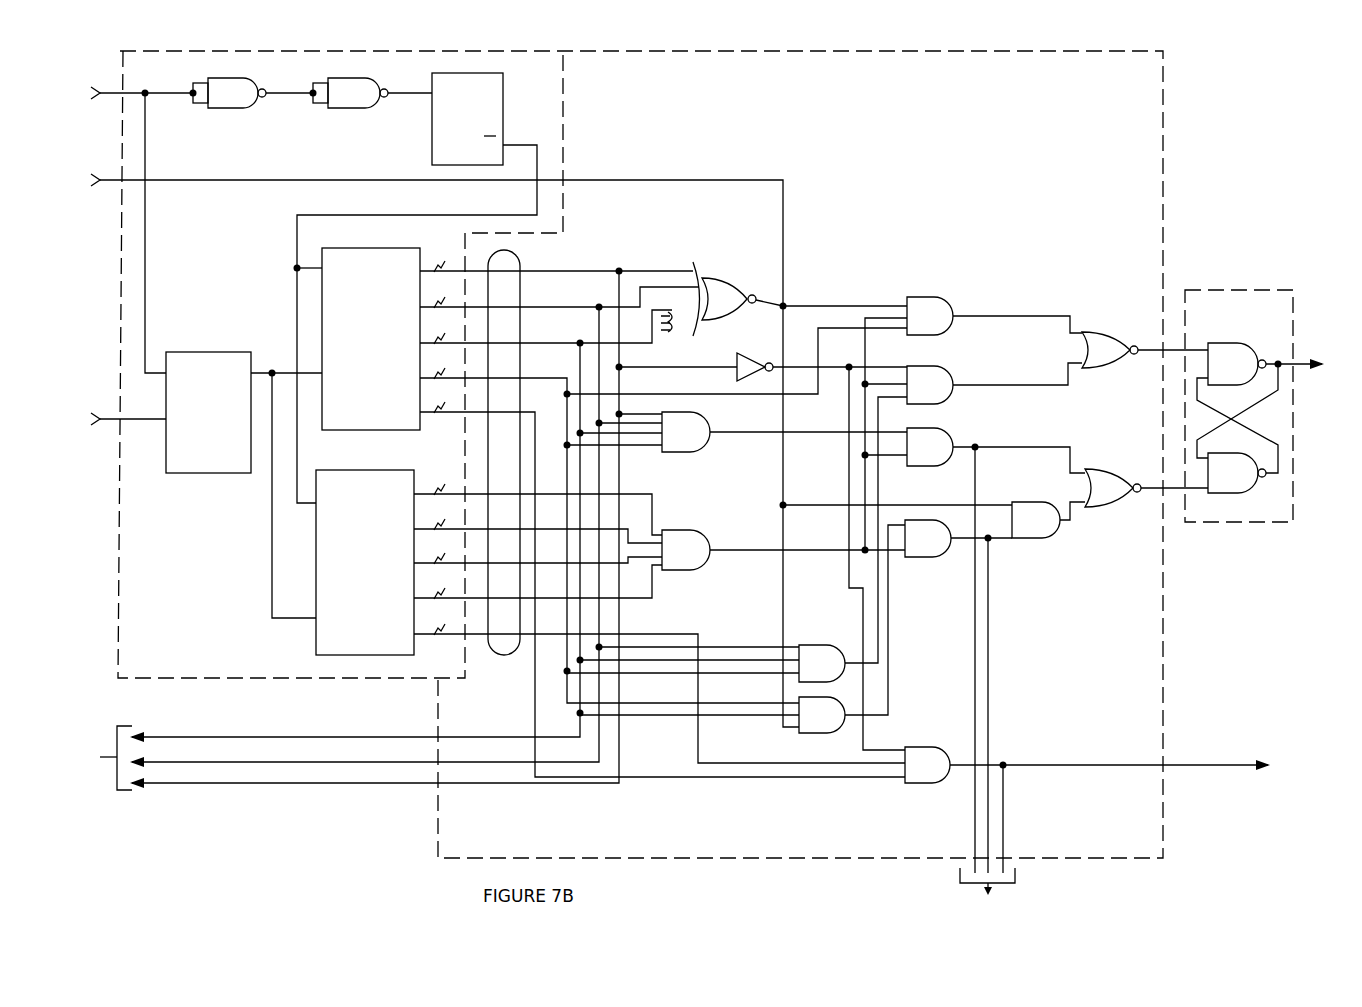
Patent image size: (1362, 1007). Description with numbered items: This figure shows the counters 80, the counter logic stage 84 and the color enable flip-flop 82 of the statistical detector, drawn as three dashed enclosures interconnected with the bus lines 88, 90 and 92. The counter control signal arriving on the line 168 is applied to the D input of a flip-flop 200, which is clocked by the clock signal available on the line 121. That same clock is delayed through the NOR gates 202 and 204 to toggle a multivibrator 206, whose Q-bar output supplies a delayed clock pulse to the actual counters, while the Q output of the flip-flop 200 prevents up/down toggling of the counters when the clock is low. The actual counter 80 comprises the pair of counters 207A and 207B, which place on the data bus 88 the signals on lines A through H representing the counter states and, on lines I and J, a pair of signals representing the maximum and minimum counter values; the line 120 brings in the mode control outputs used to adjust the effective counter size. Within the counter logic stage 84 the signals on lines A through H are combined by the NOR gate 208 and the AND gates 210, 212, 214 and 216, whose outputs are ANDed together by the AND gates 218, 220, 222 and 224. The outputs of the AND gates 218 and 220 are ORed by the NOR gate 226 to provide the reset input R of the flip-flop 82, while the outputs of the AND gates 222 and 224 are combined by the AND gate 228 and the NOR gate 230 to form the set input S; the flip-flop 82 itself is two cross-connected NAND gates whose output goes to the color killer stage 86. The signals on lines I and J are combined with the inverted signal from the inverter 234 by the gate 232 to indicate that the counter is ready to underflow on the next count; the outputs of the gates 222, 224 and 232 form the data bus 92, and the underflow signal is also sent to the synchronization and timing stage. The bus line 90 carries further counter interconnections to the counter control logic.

The counter 80 is at (123, 228).
The color enable flip-flop 82 is at (1195, 292).
The counter logic stage 84 is at (700, 52).
The output to 86 is at (1270, 411).
The data bus 88 is at (521, 254).
The bus line 90 is at (346, 529).
The data bus 92 is at (987, 683).
The line 120 is at (97, 178).
The line 121 is at (95, 117).
The line 168 is at (133, 418).
The flip-flop 200 is at (182, 350).
The NOR gate 202 is at (222, 113).
The NOR gate 204 is at (350, 113).
The multivibrator 206 is at (505, 113).
The counter 207A is at (333, 248).
The counter 207B is at (350, 470).
The NOR gate 208 is at (722, 278).
The AND gate 210 is at (690, 416).
The AND gate 212 is at (698, 540).
The AND gate 214 is at (808, 645).
The AND gate 216 is at (808, 733).
The AND gate 218 is at (915, 297).
The AND gate 220 is at (948, 366).
The AND gate 222 is at (957, 420).
The AND gate 224 is at (922, 557).
The NOR gate 226 is at (1093, 332).
The AND gate 228 is at (1045, 540).
The NOR gate 230 is at (1092, 468).
The AND gate 232 is at (912, 747).
The inverter 234 is at (745, 352).